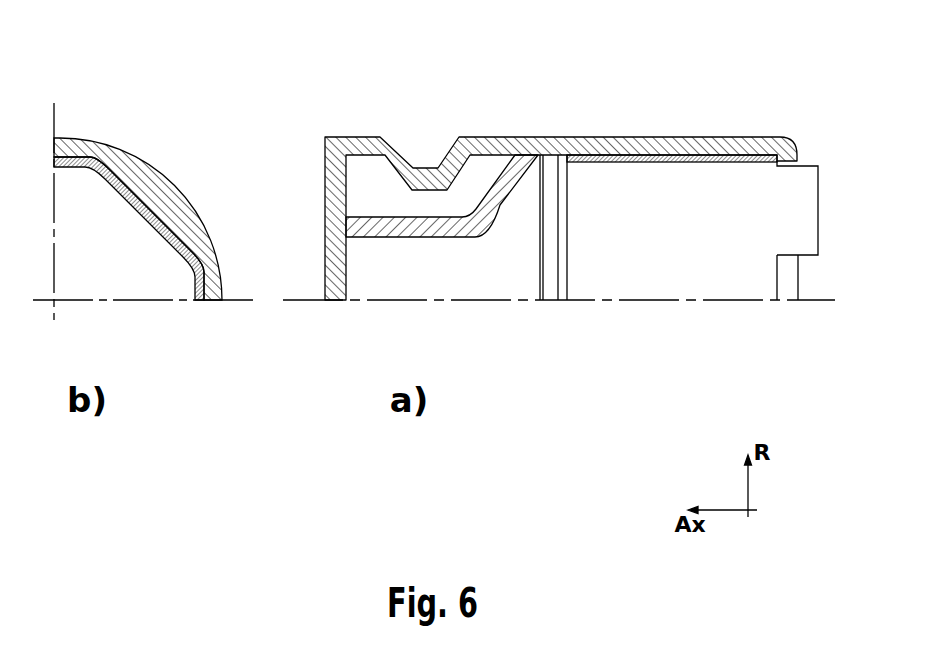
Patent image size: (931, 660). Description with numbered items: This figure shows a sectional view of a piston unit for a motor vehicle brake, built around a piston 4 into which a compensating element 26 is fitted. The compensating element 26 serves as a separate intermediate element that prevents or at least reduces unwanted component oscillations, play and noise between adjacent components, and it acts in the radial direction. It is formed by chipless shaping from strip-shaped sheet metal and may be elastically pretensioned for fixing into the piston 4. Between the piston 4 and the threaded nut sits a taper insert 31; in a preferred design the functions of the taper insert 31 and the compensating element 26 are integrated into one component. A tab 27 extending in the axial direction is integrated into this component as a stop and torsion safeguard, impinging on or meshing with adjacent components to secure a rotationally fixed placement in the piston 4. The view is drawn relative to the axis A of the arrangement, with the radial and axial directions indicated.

The piston 4 is at (145, 175).
The compensating element 26 is at (143, 220).
The tab 27 is at (800, 203).
The taper insert 31 is at (518, 173).
The axis A is at (677, 300).